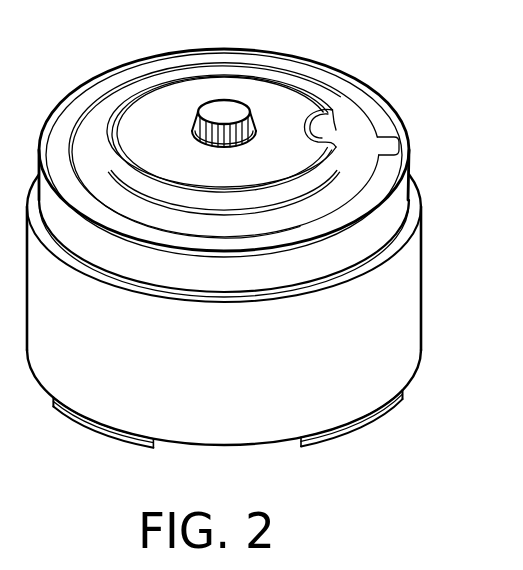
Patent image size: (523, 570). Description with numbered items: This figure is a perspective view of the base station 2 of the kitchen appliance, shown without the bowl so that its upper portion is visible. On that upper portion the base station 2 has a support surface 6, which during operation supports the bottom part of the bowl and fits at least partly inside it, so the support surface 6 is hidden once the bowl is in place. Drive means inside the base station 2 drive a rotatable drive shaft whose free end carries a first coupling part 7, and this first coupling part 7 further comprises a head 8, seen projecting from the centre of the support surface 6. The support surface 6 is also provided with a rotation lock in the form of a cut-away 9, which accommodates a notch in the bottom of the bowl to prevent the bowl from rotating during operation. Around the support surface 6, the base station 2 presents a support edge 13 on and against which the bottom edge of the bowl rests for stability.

The base station 2 is at (413, 295).
The support surface 6 is at (98, 118).
The first coupling part 7 is at (234, 91).
The head 8 is at (216, 106).
The cut-away 9 is at (339, 133).
The support edge 13 is at (411, 201).